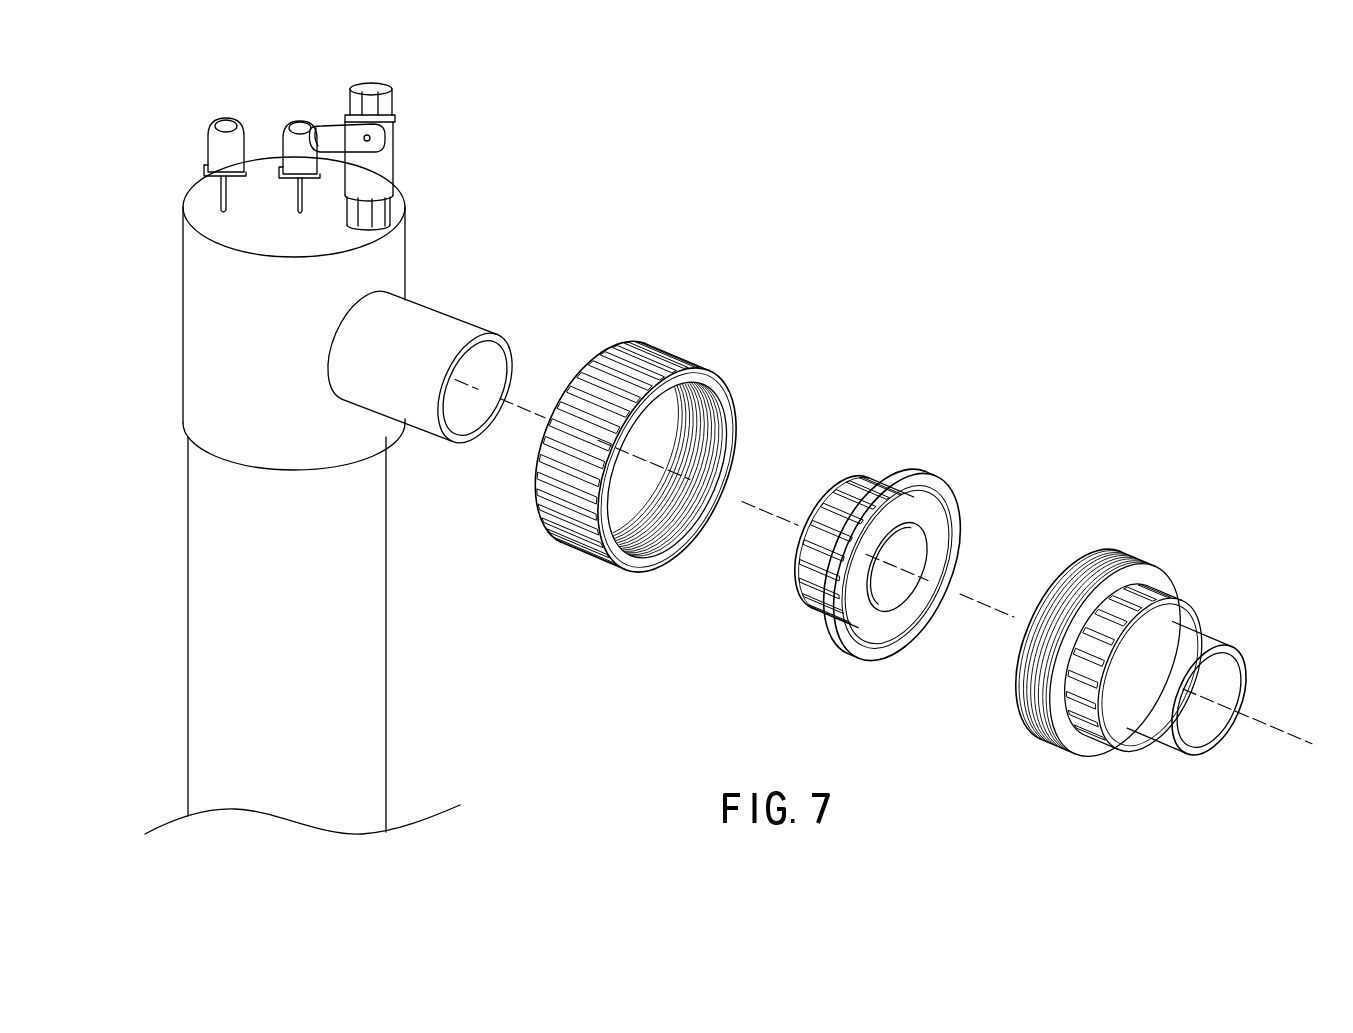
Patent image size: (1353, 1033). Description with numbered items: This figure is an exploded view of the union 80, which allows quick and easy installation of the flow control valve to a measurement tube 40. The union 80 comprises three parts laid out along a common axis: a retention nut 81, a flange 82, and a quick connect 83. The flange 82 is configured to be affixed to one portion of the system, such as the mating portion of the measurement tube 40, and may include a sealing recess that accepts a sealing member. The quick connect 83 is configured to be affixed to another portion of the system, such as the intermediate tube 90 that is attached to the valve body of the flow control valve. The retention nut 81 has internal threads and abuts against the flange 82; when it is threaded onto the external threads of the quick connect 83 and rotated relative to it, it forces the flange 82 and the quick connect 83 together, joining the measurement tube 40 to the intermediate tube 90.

The measurement tube 40 is at (490, 189).
The union 80 is at (940, 365).
The retention nut 81 is at (569, 580).
The flange 82 is at (843, 658).
The quick connect 83 is at (1071, 753).
The intermediate tube 90 is at (1190, 637).